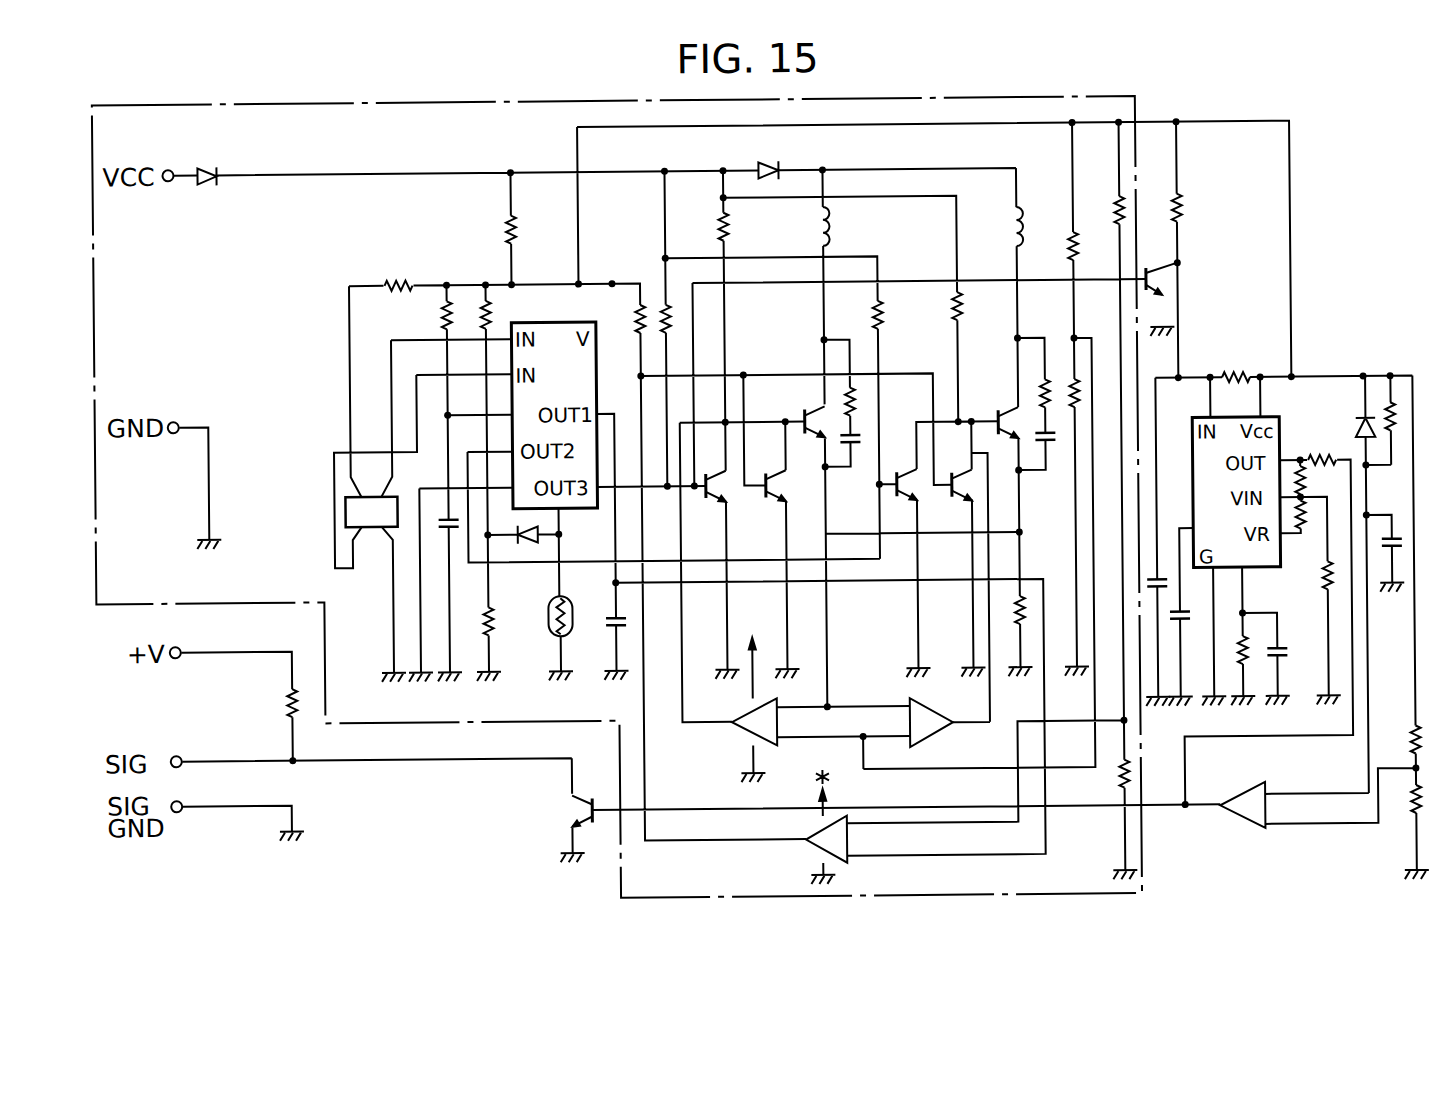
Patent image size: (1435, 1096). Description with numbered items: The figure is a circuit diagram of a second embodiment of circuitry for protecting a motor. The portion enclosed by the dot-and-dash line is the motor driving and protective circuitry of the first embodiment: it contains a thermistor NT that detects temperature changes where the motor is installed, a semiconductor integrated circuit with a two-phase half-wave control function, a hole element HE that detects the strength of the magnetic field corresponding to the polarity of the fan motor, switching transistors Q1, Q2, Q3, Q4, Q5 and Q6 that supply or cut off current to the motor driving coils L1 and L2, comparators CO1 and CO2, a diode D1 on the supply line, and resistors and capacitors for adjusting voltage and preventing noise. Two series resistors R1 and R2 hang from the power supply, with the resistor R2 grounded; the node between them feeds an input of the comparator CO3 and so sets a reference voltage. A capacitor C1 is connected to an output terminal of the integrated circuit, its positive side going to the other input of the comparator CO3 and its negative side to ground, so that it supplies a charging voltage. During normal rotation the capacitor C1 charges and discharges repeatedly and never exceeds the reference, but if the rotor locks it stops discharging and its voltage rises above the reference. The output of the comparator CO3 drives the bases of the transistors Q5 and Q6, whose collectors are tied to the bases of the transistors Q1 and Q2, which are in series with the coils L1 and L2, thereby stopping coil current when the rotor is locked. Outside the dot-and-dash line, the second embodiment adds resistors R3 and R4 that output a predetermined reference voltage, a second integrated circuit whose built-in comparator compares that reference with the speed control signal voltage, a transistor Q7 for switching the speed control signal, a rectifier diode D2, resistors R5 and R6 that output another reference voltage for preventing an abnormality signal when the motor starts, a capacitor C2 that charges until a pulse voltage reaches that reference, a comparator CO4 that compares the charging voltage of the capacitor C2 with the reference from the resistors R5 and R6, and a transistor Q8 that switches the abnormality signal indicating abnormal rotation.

The hole element HE is at (371, 512).
The diode D1 is at (768, 155).
The rectifier diode D2 is at (1343, 430).
The motor driving coil L1 is at (847, 225).
The motor driving coil L2 is at (1035, 226).
The resistor R1 is at (1100, 210).
The resistor R2 is at (1102, 779).
The resistor R3 is at (1315, 482).
The resistor R4 is at (1301, 530).
The resistor R5 is at (1399, 741).
The resistor R6 is at (1400, 799).
The switching transistor Q1 is at (805, 410).
The switching transistor Q2 is at (996, 411).
The switching transistor Q3 is at (705, 503).
The switching transistor Q4 is at (900, 471).
The switching transistor Q5 is at (763, 502).
The switching transistor Q6 is at (953, 473).
The transistor Q7 is at (1159, 267).
The transistor Q8 is at (592, 799).
The comparator CO1 is at (737, 691).
The comparator CO2 is at (944, 713).
The comparator CO3 is at (799, 831).
The comparator CO4 is at (1234, 797).
The thermistor NT is at (542, 616).
The capacitor C1 is at (602, 619).
The capacitor C2 is at (1386, 518).